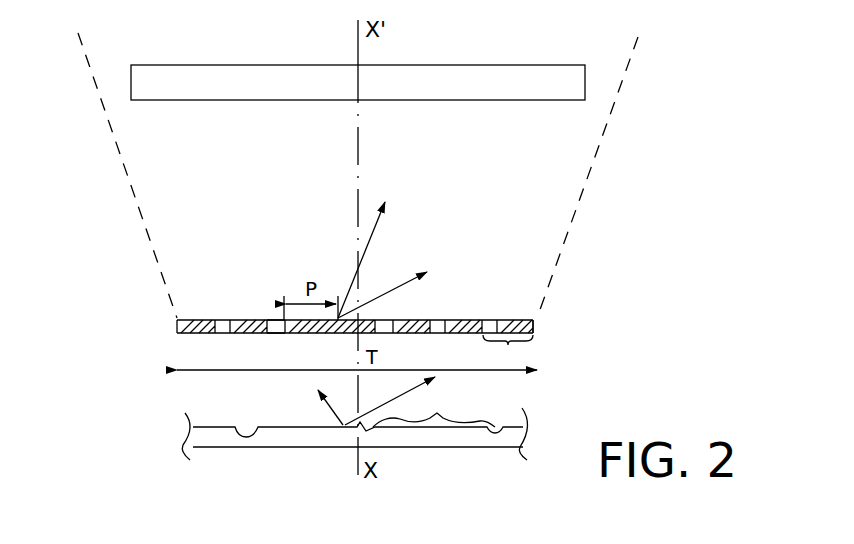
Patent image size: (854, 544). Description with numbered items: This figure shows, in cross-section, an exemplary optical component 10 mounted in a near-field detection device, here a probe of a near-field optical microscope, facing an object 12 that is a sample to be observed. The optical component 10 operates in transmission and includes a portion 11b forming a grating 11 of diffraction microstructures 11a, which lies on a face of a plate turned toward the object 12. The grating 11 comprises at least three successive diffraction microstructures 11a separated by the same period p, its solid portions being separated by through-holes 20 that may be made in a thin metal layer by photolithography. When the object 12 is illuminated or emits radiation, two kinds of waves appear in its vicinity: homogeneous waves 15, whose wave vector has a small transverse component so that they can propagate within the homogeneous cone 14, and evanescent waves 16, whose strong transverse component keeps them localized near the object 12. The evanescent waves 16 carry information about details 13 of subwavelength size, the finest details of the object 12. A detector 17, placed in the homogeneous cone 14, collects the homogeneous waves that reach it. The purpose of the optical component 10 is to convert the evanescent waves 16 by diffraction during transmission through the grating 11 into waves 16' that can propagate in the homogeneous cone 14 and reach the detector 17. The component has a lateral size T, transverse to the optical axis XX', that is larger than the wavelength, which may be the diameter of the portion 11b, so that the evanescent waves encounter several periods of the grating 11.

The optical component 10 is at (549, 312).
The grating 11 is at (467, 317).
The diffraction microstructures 11a is at (508, 350).
The portion 11b is at (534, 326).
The object 12 is at (443, 437).
The details 13 is at (434, 410).
The homogeneous cone 14 is at (150, 242).
The homogeneous waves 15 is at (328, 404).
The evanescent waves 16 is at (401, 348).
The converted waves 16' is at (389, 260).
The detector 17 is at (540, 101).
The through-holes 20 is at (274, 333).